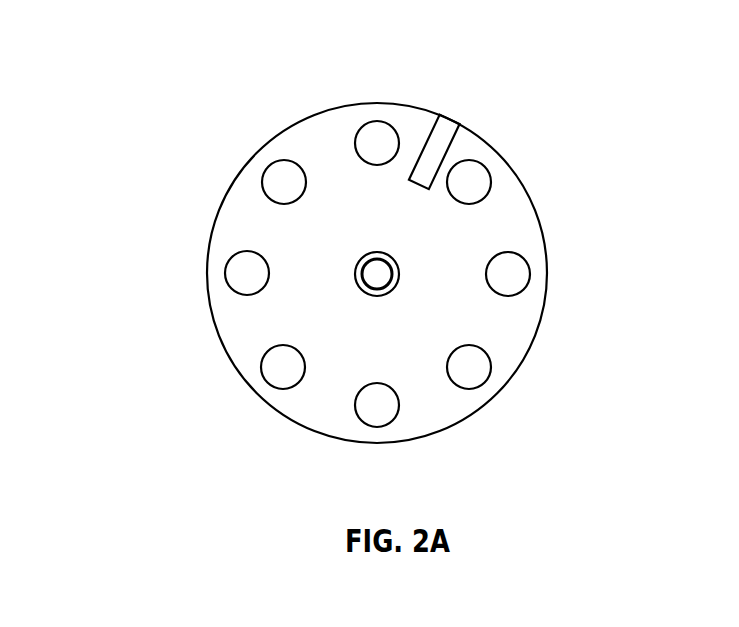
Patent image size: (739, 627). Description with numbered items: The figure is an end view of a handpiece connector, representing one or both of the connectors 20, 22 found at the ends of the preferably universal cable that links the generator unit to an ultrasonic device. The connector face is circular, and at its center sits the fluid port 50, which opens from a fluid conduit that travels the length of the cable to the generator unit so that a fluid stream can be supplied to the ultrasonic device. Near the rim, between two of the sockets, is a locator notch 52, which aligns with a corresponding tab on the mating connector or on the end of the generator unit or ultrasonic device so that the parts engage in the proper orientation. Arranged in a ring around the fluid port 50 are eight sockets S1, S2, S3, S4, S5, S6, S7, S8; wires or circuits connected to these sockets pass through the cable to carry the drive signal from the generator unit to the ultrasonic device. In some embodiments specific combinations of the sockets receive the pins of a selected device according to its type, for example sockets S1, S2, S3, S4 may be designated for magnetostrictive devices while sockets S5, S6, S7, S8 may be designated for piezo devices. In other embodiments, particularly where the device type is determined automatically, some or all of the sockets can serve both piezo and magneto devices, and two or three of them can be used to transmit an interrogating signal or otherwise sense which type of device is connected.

The connector 20 is at (305, 241).
The connector 22 is at (377, 273).
The fluid port 50 is at (408, 272).
The locator notch 52 is at (457, 108).
The socket S1 is at (380, 121).
The socket S2 is at (492, 181).
The socket S3 is at (531, 275).
The socket S4 is at (492, 363).
The socket S5 is at (377, 427).
The socket S6 is at (262, 366).
The socket S7 is at (226, 274).
The socket S8 is at (262, 182).